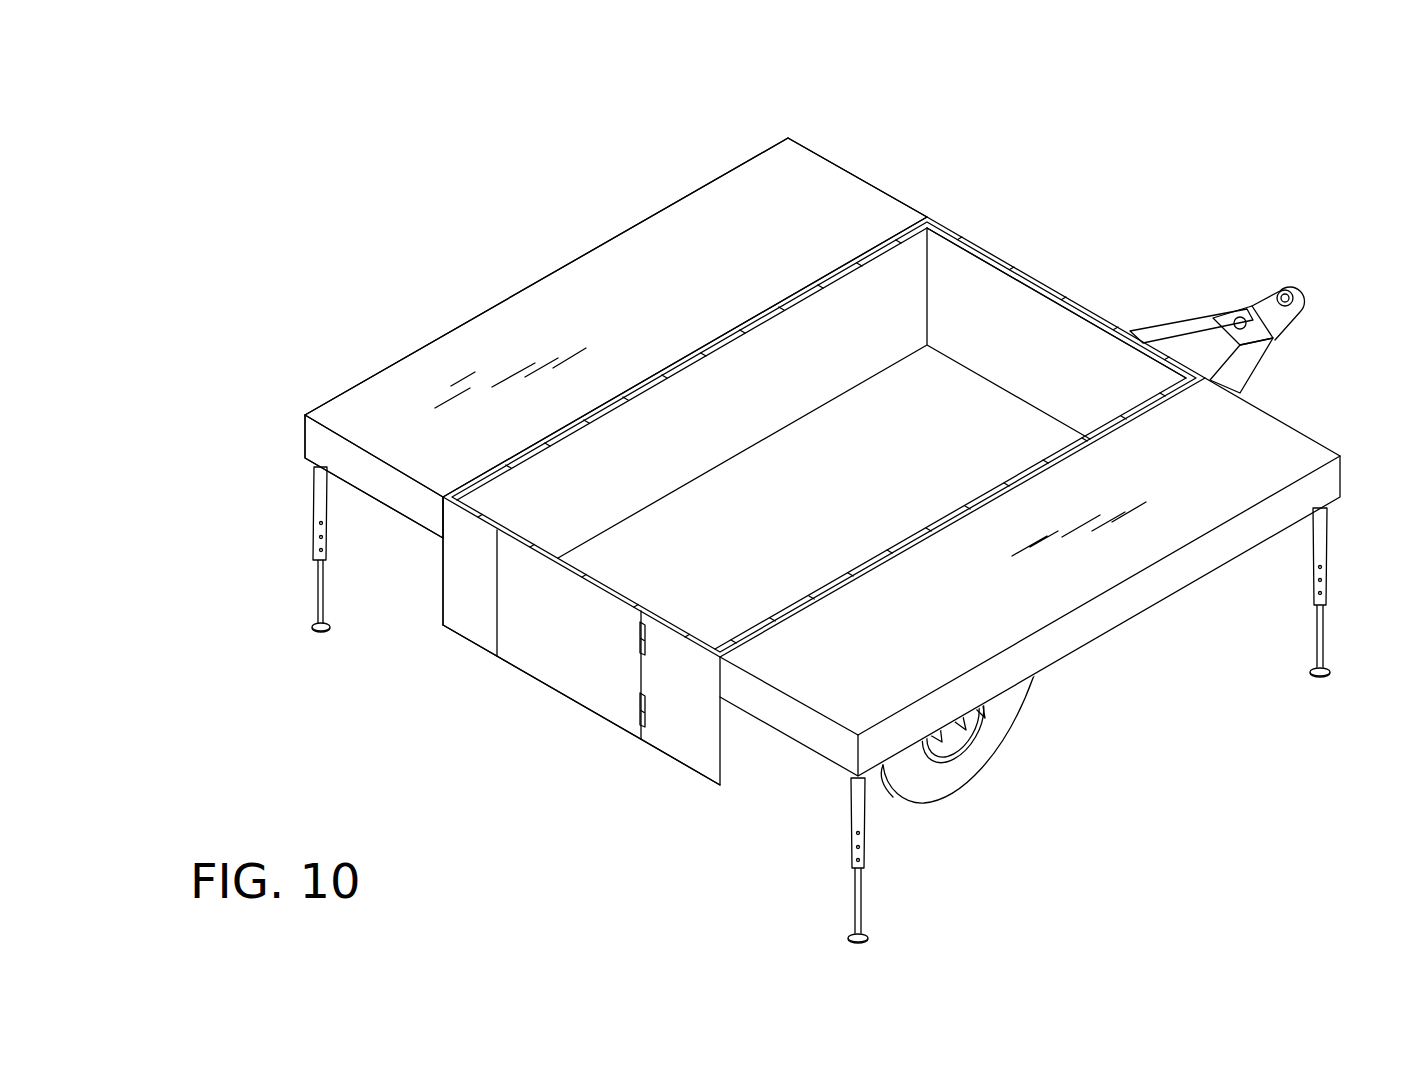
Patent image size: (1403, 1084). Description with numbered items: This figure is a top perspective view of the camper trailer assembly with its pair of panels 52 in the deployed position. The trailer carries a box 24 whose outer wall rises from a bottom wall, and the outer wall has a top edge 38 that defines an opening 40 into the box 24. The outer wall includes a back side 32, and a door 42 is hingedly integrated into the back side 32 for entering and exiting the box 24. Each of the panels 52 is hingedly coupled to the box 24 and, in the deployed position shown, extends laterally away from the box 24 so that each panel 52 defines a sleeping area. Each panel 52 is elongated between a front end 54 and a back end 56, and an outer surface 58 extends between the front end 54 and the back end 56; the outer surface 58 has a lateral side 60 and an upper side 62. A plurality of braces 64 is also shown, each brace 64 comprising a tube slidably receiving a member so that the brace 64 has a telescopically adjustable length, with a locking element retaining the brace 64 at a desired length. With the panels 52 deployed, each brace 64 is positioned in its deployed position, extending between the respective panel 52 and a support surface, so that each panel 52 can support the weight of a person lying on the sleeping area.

The box 24 is at (1093, 312).
The back side 32 is at (682, 720).
The top edge 38 is at (1043, 287).
The opening 40 is at (957, 266).
The door 42 is at (598, 690).
The panel 52 is at (788, 138).
The front end 54 is at (865, 180).
The back end 56 is at (370, 483).
The outer surface 58 is at (640, 283).
The lateral side 60 is at (452, 535).
The upper side 62 is at (488, 338).
The brace 64 is at (315, 545).